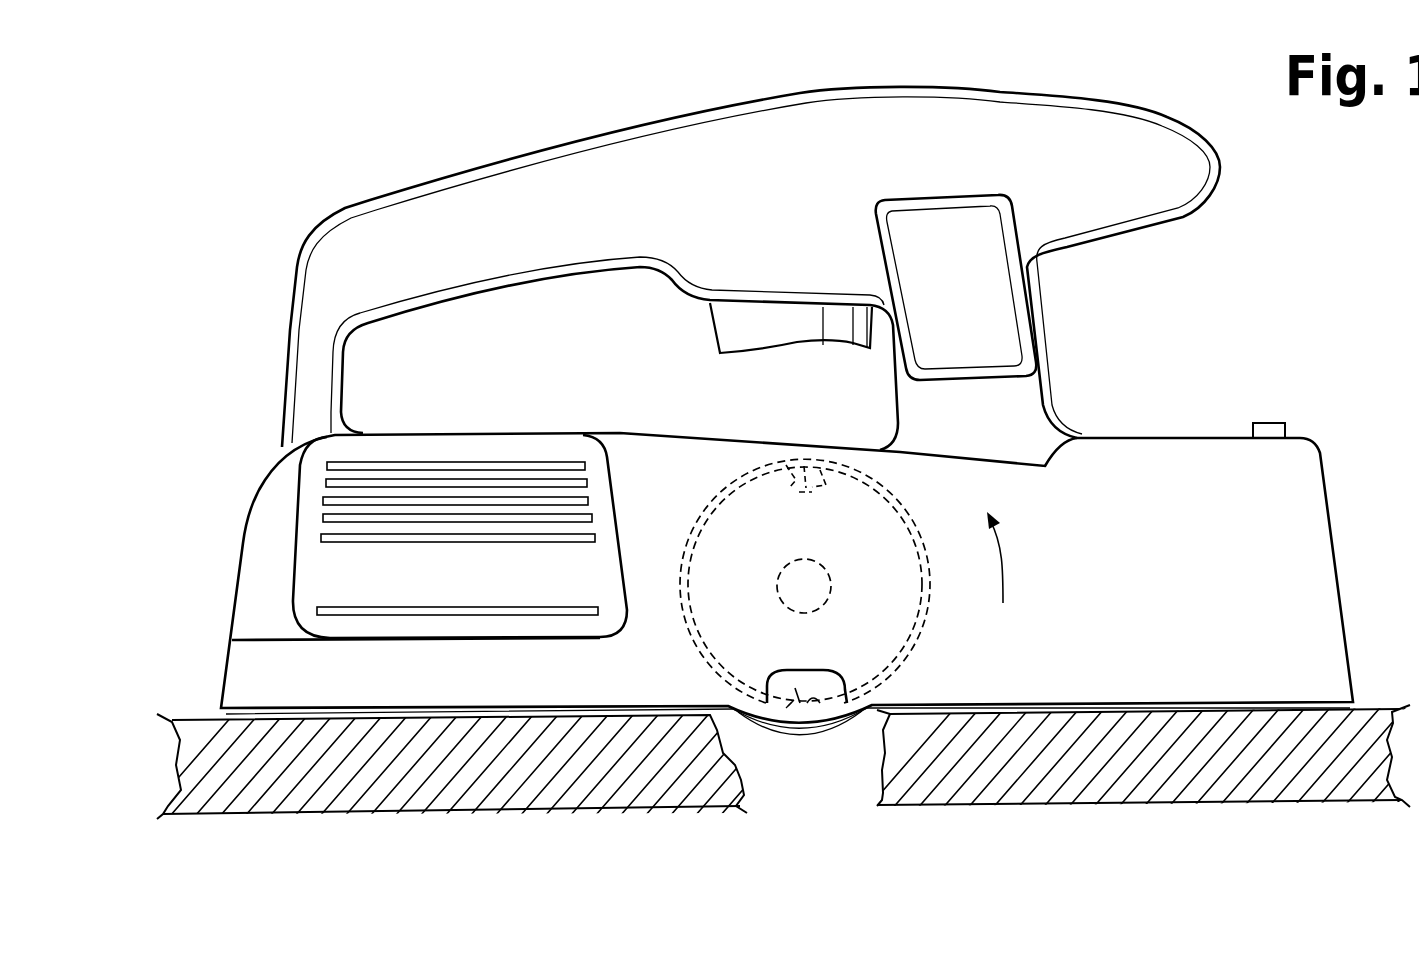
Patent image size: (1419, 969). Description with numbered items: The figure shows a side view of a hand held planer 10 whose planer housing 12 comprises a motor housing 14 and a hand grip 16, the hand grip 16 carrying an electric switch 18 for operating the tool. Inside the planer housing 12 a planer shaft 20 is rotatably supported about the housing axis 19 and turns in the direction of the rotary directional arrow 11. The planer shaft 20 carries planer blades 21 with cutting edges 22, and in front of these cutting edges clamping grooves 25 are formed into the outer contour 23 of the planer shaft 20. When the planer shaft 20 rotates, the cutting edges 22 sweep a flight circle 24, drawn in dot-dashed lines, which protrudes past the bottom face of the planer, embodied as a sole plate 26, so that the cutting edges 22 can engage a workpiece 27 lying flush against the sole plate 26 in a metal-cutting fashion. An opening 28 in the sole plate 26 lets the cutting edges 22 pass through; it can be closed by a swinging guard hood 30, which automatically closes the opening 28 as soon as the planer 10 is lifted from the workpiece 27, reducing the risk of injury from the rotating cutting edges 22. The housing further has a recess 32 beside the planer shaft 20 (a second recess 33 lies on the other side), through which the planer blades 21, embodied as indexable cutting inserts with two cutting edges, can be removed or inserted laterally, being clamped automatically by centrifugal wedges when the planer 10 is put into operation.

The planer 10 is at (318, 160).
The rotary directional arrow 11 is at (1003, 567).
The planer housing 12 is at (625, 445).
The motor housing 14 is at (448, 447).
The hand grip 16 is at (625, 158).
The electric switch 18 is at (745, 333).
The housing axis 19 is at (827, 573).
The planer shaft 20 is at (730, 558).
The planer blades 21 is at (818, 470).
The cutting edges 22 is at (810, 467).
The outer contour 23 is at (683, 613).
The flight circle 24 is at (707, 657).
The clamping grooves 25 is at (793, 462).
The sole plate 26 is at (337, 720).
The workpiece 27 is at (1125, 755).
The opening 28 is at (787, 677).
The swinging guard hood 30 is at (840, 723).
The recess 32 is at (792, 703).
The suction opening 33 is at (789, 705).